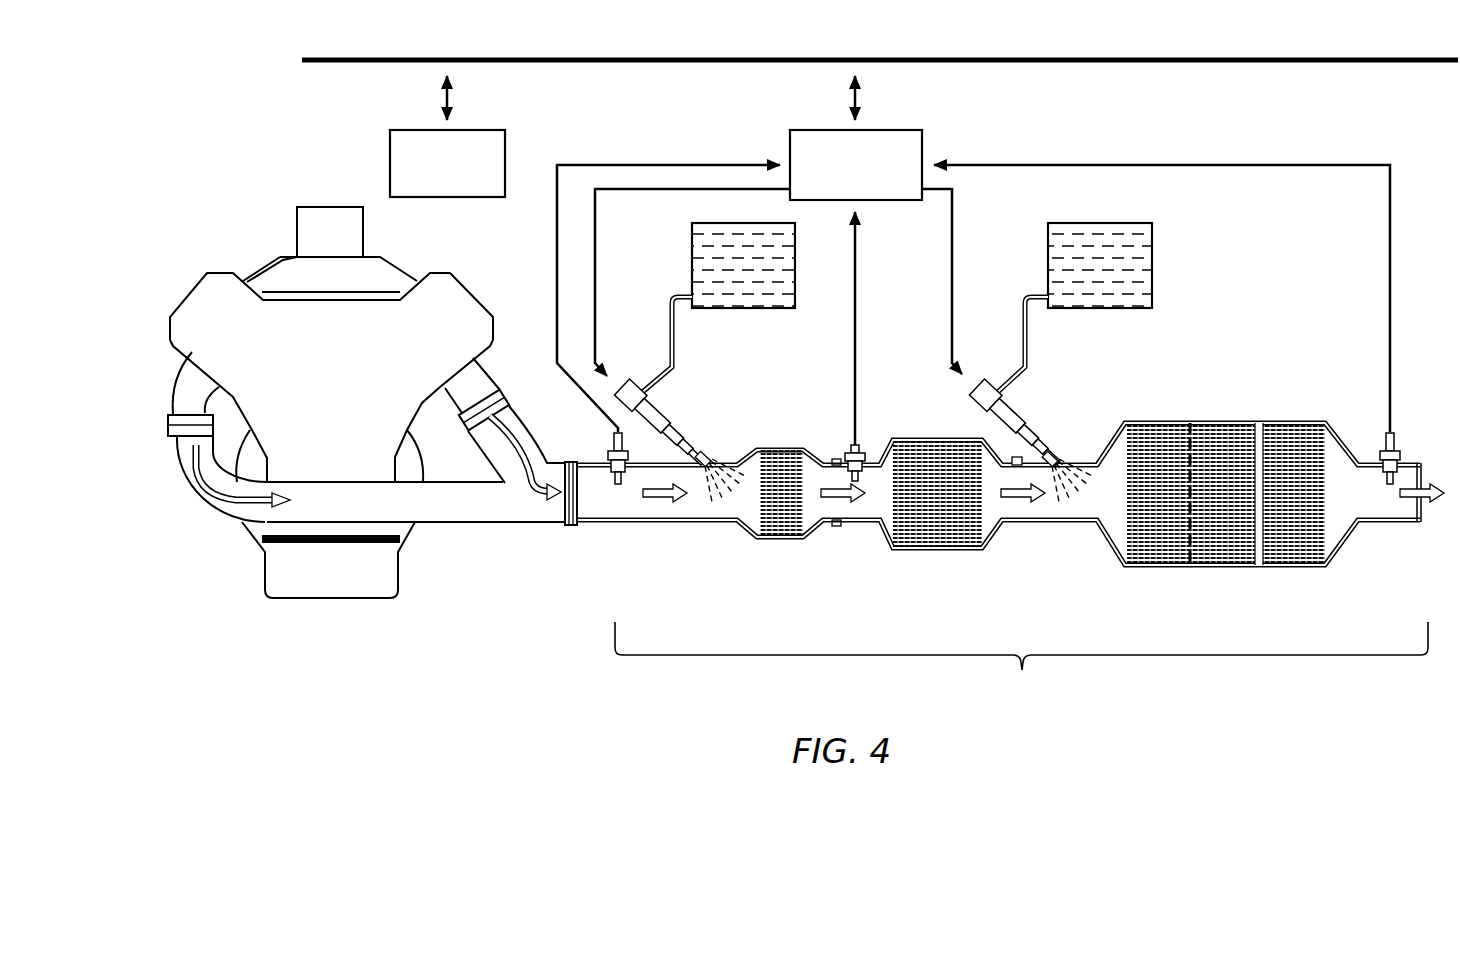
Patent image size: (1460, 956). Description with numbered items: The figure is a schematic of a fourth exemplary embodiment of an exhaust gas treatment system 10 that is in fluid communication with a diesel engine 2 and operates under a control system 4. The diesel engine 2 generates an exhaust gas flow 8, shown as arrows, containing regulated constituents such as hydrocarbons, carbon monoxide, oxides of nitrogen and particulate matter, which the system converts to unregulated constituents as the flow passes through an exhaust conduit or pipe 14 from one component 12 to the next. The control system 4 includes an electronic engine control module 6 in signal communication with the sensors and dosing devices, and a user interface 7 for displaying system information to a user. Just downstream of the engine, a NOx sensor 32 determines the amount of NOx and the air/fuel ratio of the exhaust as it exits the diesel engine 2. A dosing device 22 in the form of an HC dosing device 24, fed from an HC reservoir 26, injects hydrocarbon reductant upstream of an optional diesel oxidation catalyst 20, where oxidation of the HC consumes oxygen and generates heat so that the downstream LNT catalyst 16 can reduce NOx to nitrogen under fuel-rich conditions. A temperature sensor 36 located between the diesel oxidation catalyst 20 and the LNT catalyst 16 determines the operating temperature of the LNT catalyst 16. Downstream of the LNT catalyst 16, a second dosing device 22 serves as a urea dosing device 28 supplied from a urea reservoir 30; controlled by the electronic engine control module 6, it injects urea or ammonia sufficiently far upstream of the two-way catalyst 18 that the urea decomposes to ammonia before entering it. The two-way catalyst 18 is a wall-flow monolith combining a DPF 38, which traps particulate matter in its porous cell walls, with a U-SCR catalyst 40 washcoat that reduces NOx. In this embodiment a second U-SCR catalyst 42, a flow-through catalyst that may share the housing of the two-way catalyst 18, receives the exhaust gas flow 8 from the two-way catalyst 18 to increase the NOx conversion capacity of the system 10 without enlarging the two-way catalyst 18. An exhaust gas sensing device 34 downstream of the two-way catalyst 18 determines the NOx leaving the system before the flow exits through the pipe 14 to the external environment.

The diesel engine 2 is at (188, 282).
The control system 4 is at (941, 52).
The electronic engine control module 6 is at (786, 143).
The user interface 7 is at (386, 147).
The exhaust gas flow 8 is at (659, 503).
The exhaust gas treatment system 10 is at (1022, 670).
The component 12 is at (788, 445).
The pipe 14 is at (632, 523).
The LNT catalyst 16 is at (930, 550).
The two-way catalyst 18 is at (1189, 567).
The diesel oxidation catalyst 20 is at (778, 540).
The dosing device 22 is at (665, 422).
The HC dosing device 24 is at (700, 458).
The HC reservoir 26 is at (692, 268).
The urea dosing device 28 is at (1057, 456).
The urea reservoir 30 is at (1150, 260).
The NOx sensor 32 is at (612, 445).
The exhaust gas sensing device 34 is at (1384, 445).
The temperature sensor 36 is at (860, 440).
The DPF 38 is at (1158, 537).
The U-SCR catalyst 40 is at (1232, 537).
The second U-SCR catalyst 42 is at (1288, 537).